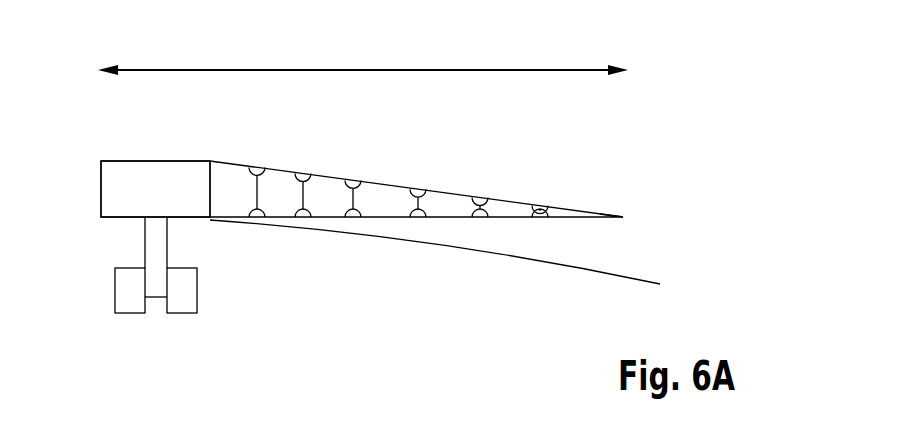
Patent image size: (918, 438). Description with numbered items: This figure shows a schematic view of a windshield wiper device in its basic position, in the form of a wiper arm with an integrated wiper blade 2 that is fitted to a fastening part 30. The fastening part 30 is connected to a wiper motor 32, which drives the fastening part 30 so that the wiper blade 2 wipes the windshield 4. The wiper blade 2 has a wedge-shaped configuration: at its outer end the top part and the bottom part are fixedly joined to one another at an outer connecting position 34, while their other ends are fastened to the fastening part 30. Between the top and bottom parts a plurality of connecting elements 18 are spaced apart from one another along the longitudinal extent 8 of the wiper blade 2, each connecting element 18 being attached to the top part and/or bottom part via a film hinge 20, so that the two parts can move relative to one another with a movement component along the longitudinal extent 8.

The wiper blade 2 is at (546, 141).
The windshield 4 is at (612, 274).
The longitudinal extent 8 is at (378, 70).
The connecting elements 18 is at (258, 188).
The film hinge 20 is at (255, 166).
The fastening part 30 is at (107, 185).
The wiper motor 32 is at (125, 289).
The outer connecting position 34 is at (624, 216).